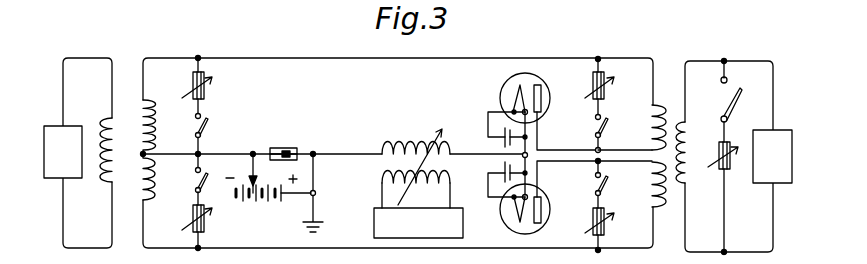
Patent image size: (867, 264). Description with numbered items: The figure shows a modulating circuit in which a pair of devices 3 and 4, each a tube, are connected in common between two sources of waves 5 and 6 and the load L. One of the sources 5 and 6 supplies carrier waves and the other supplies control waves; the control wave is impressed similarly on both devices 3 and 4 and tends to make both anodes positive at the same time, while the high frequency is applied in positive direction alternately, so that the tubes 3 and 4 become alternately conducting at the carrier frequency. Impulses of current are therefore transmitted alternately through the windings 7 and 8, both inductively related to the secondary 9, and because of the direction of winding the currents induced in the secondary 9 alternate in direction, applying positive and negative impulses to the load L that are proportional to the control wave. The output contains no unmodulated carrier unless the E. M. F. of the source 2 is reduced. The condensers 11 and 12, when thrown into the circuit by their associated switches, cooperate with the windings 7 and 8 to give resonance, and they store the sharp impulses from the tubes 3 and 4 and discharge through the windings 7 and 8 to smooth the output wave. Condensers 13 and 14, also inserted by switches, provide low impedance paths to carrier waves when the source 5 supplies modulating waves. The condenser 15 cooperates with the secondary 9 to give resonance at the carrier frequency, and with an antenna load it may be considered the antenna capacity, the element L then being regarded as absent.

The source 2 is at (252, 205).
The device 3 is at (552, 70).
The device 4 is at (546, 223).
The source of waves 5 is at (63, 152).
The source of waves 6 is at (418, 204).
The winding 7 is at (646, 121).
The winding 8 is at (646, 192).
The secondary 9 is at (693, 135).
The condenser 11 is at (612, 86).
The condenser 12 is at (610, 229).
The condenser 13 is at (209, 85).
The condenser 14 is at (213, 209).
The condenser 15 is at (712, 175).
The load L is at (772, 156).